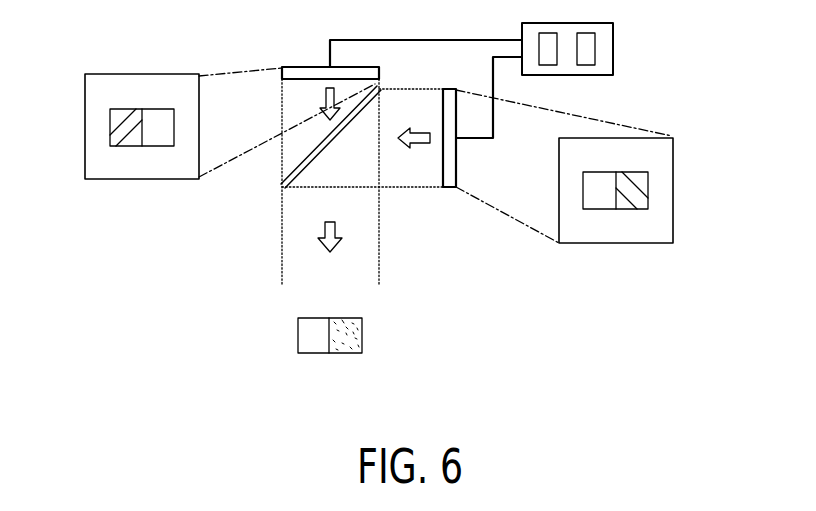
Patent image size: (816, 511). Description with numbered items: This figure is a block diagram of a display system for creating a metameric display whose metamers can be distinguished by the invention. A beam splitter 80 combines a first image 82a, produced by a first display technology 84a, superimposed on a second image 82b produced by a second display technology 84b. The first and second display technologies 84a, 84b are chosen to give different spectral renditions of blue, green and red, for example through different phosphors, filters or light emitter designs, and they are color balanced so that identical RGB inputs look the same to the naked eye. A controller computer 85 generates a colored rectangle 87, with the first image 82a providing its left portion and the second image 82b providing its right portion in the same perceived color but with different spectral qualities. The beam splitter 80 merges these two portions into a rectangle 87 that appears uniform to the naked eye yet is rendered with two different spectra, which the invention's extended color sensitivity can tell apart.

The beam splitter 80 is at (282, 185).
The first image 82a is at (140, 74).
The second image 82b is at (673, 190).
The first display technology 84a is at (310, 67).
The second display technology 84b is at (456, 150).
The controller computer 85 is at (613, 46).
The colored rectangle 87 is at (123, 140).